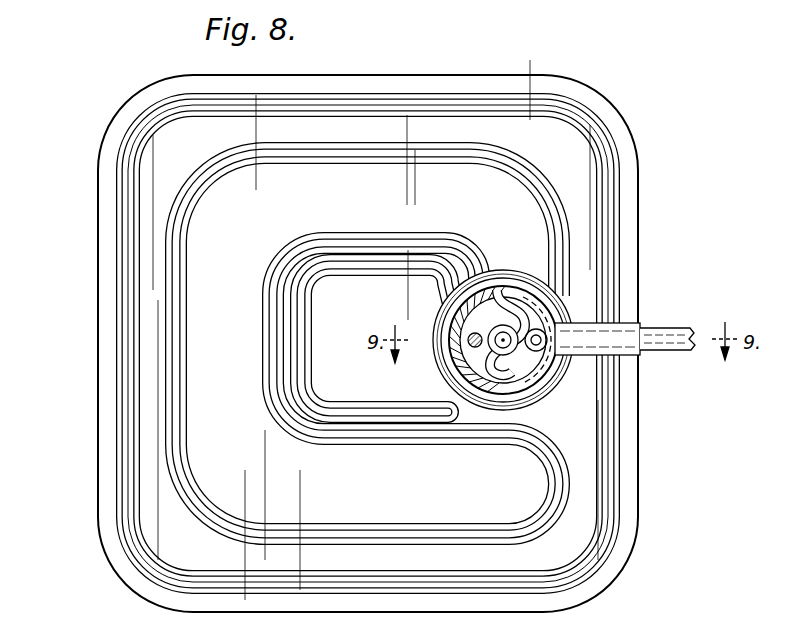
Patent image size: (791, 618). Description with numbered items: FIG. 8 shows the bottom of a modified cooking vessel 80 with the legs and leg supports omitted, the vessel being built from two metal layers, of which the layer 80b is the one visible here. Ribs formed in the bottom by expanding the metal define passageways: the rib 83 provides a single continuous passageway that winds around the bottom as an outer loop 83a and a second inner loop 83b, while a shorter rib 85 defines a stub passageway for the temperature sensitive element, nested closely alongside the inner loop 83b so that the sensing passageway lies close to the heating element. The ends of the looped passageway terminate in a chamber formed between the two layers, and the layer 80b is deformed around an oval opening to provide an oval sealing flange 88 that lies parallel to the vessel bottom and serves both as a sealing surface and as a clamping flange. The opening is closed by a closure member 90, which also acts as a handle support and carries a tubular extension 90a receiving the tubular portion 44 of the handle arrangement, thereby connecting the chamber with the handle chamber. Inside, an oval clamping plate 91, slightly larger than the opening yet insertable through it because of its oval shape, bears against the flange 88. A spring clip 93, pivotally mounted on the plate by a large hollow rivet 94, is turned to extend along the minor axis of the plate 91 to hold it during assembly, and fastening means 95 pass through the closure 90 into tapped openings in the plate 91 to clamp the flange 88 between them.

The tubular portion 44 is at (668, 330).
The cooking vessel 80 is at (92, 467).
The layer of metal 80b is at (492, 271).
The rib 83 is at (305, 143).
The outer loop 83a is at (182, 357).
The inner loop 83b is at (343, 448).
The rib 85 is at (353, 276).
The oval sealing flange 88 is at (505, 430).
The closure member 90 is at (527, 362).
The tubular extension 90a is at (588, 323).
The clamping plate 91 is at (463, 331).
The spring clip 93 is at (508, 298).
The hollow rivet 94 is at (490, 348).
The fastening means 95 is at (556, 364).